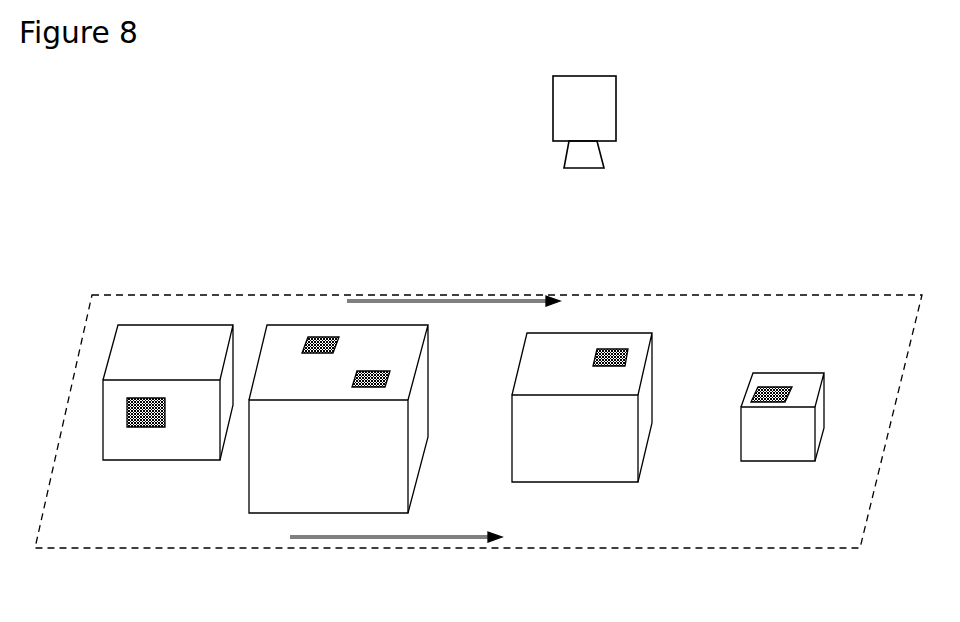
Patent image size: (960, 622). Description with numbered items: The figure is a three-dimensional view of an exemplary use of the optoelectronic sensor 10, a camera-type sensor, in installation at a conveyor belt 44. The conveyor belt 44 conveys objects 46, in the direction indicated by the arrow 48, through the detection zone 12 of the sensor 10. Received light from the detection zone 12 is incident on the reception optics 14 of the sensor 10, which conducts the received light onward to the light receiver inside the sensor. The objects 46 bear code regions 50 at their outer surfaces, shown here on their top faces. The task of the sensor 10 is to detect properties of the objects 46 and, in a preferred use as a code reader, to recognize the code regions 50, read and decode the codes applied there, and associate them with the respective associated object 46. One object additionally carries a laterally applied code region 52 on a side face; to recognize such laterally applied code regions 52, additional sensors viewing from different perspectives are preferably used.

The optoelectronic sensor 10 is at (600, 113).
The detection zone 12 is at (580, 242).
The reception optics 14 is at (603, 160).
The conveyor belt 44 is at (828, 549).
The objects 46 is at (127, 340).
The arrow 48 is at (377, 542).
The code regions 50 is at (367, 370).
The laterally applied code regions 52 is at (140, 415).